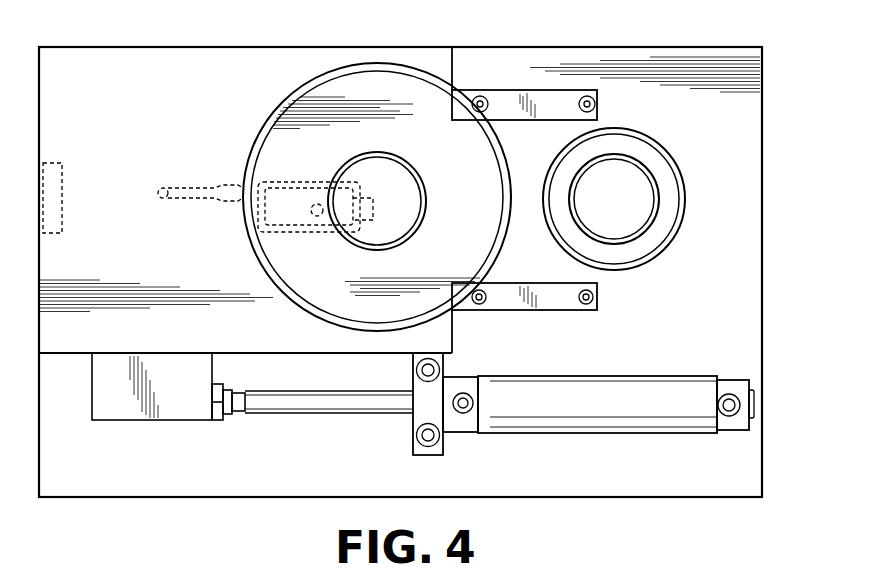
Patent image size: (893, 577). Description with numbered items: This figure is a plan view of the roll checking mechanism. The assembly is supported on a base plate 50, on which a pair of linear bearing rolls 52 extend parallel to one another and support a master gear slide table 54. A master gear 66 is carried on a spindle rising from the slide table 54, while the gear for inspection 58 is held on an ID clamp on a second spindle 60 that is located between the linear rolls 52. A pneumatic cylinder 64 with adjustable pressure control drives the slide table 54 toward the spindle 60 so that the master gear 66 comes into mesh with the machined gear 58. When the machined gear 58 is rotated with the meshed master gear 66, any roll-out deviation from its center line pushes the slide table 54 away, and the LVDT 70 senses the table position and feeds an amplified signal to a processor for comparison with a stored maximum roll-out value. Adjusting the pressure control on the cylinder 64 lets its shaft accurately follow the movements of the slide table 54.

The base plate 50 is at (745, 113).
The linear bearing rolls 52 is at (507, 90).
The master gear slide table 54 is at (153, 106).
The gear for inspection 58 is at (657, 143).
The second spindle 60 is at (658, 193).
The pneumatic cylinder 64 is at (643, 393).
The master gear 66 is at (350, 83).
The LVDT 70 is at (287, 232).